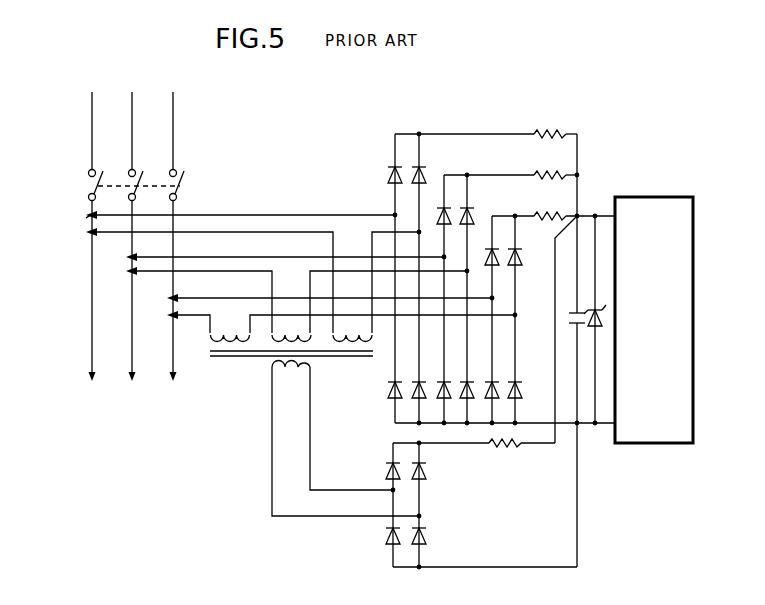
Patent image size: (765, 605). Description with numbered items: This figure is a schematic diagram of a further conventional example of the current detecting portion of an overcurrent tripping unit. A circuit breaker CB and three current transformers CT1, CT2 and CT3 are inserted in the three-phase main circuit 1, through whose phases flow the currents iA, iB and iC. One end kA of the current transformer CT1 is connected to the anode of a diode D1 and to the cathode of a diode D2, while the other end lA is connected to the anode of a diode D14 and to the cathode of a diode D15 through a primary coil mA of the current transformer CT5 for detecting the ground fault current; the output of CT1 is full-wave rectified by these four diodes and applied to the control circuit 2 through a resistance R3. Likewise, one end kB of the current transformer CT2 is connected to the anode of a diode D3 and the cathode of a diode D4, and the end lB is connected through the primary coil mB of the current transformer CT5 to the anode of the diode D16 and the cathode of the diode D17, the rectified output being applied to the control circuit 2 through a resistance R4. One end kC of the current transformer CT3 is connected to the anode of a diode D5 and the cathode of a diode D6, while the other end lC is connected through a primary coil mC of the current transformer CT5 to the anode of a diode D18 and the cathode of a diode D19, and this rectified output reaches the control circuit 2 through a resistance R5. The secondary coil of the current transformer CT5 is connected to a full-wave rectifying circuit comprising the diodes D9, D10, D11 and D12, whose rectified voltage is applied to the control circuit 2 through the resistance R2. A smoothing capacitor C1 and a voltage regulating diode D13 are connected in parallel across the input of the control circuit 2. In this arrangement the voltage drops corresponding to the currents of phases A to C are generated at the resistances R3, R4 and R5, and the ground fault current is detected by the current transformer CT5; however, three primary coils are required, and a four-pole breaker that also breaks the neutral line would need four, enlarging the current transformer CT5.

The main circuit 1 is at (136, 73).
The control circuit 2 is at (649, 197).
The circuit breaker CB is at (186, 186).
The current transformer CT1 is at (88, 226).
The current transformer CT2 is at (132, 261).
The current transformer CT3 is at (174, 305).
The current transformer for detecting the ground fault current CT5 is at (266, 367).
The one end of current transformer CT1 kA is at (242, 205).
The other end of current transformer CT1 lA is at (254, 282).
The one end of current transformer CT2 kB is at (287, 248).
The end of current transformer CT2 lB is at (298, 302).
The one end of current transformer CT3 kC is at (331, 292).
The other end of current transformer CT3 lC is at (343, 324).
The primary coil mA is at (352, 329).
The primary coil mB is at (291, 329).
The primary coil mC is at (230, 326).
The phase A current iA is at (88, 307).
The phase B current iB is at (128, 307).
The phase C current iC is at (168, 307).
The diode D1 is at (386, 178).
The diode D2 is at (389, 387).
The diode D3 is at (445, 210).
The diode D4 is at (451, 402).
The diode D5 is at (488, 266).
The diode D6 is at (500, 402).
The diode D9 is at (382, 474).
The diode D10 is at (382, 538).
The diode D11 is at (428, 474).
The diode D12 is at (428, 538).
The voltage regulating diode D13 is at (592, 333).
The diode D14 is at (423, 178).
The diode D15 is at (430, 402).
The diode D16 is at (474, 218).
The diode D17 is at (479, 402).
The diode D18 is at (518, 262).
The diode D19 is at (518, 392).
The resistance R2 is at (505, 444).
The resistance R3 is at (548, 130).
The resistance R4 is at (548, 170).
The resistance R5 is at (548, 206).
The smoothing capacitor C1 is at (571, 322).